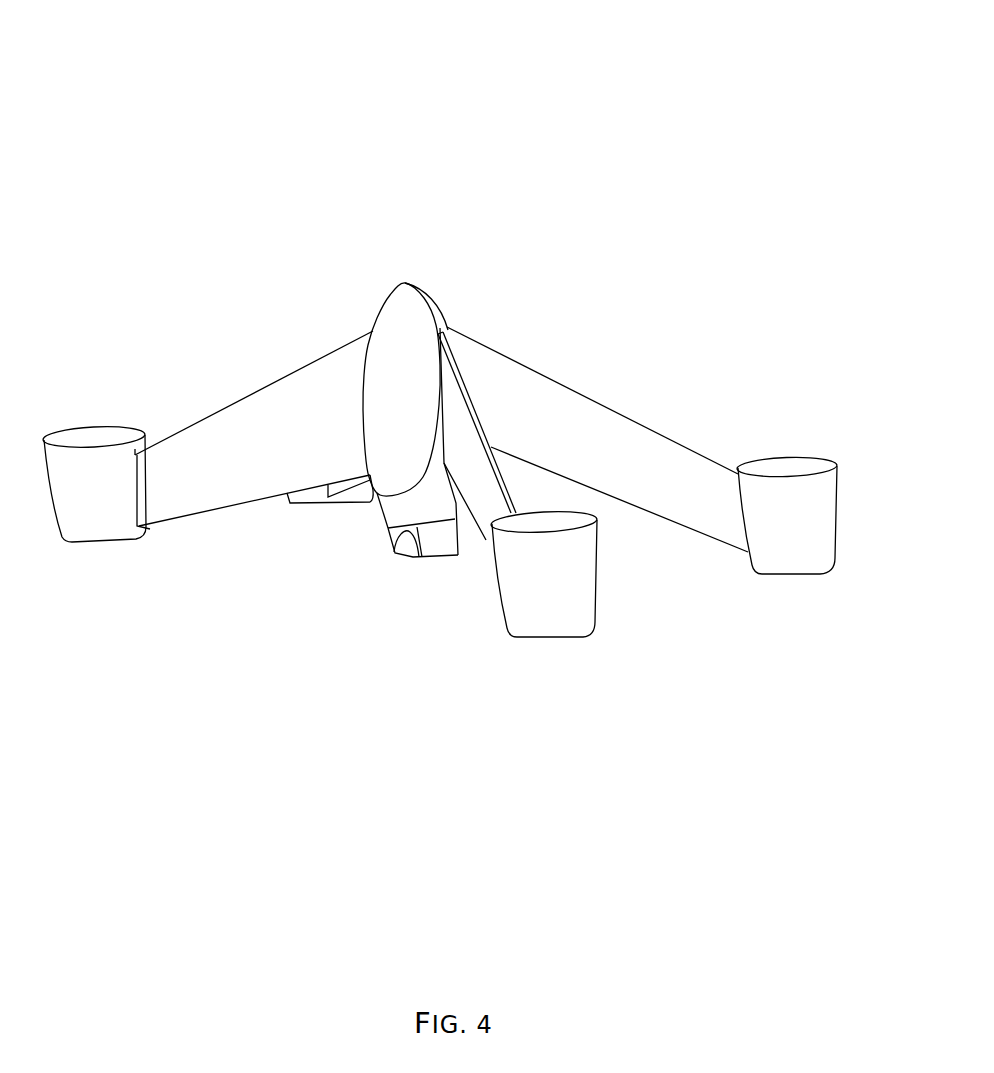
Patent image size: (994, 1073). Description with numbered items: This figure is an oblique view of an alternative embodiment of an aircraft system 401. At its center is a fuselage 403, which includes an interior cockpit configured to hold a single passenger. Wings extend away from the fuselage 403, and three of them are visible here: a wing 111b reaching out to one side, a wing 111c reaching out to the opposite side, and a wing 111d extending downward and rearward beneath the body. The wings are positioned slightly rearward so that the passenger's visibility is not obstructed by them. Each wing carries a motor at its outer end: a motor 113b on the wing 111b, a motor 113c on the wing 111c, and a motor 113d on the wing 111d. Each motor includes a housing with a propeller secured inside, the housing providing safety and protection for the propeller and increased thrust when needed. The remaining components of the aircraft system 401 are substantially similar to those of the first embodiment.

The aircraft system 401 is at (188, 104).
The fuselage 403 is at (381, 310).
The wing 111b is at (272, 385).
The wing 111c is at (585, 398).
The wing 111d is at (484, 536).
The motor 113b is at (127, 542).
The motor 113c is at (802, 573).
The motor 113d is at (543, 637).